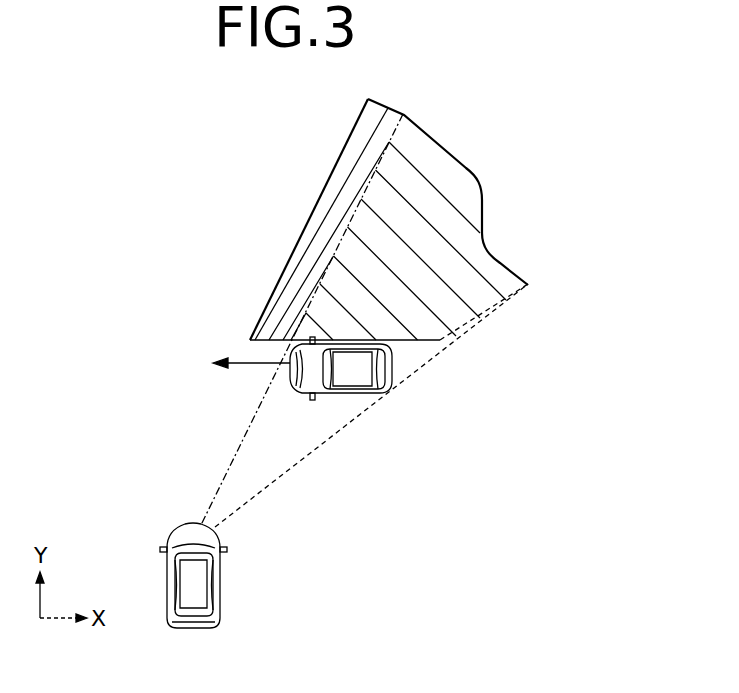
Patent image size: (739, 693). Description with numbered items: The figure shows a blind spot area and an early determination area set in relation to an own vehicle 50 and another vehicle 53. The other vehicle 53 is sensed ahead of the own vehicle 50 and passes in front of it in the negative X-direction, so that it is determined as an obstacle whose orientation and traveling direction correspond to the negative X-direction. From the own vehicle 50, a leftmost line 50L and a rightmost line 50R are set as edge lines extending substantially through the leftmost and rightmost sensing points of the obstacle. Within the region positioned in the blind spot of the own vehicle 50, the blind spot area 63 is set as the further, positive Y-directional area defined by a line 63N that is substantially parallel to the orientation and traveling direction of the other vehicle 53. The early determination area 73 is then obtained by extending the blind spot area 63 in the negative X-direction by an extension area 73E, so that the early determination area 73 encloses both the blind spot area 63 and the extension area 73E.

The own vehicle 50 is at (168, 570).
The leftmost line 50L is at (230, 462).
The rightmost line 50R is at (270, 492).
The other vehicle 53 is at (395, 377).
The blind spot area 63 is at (448, 148).
The line 63N is at (440, 344).
The early determination area 73 is at (360, 110).
The extension area 73E is at (320, 208).